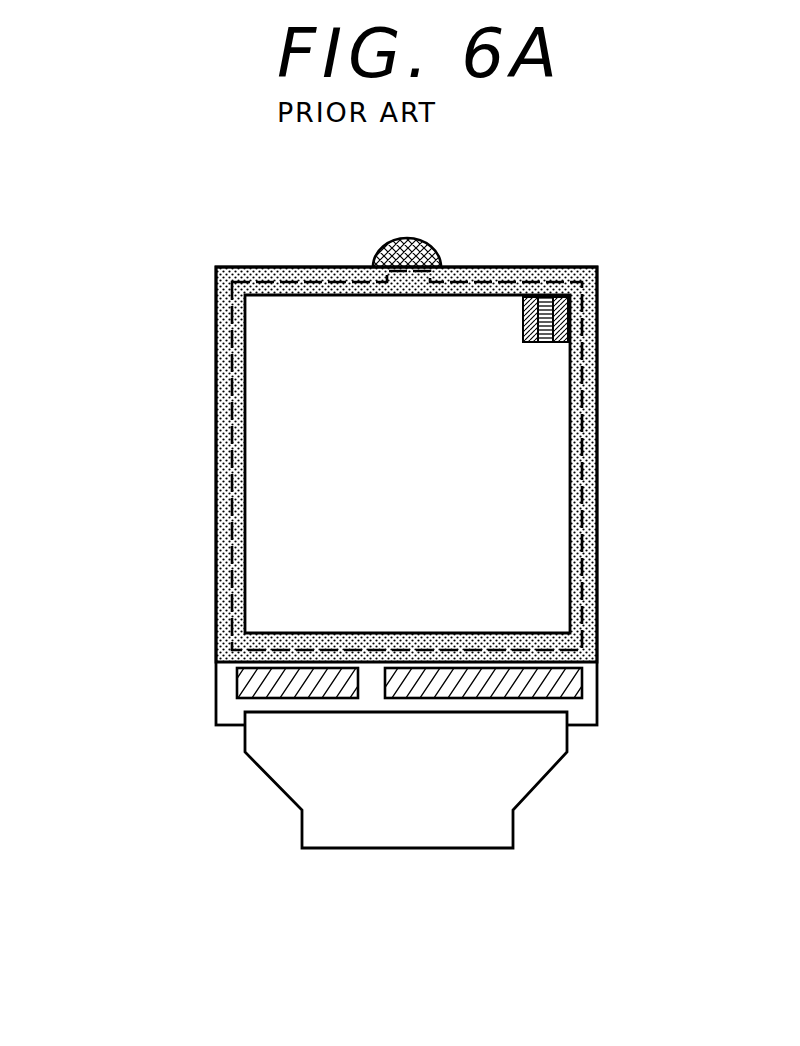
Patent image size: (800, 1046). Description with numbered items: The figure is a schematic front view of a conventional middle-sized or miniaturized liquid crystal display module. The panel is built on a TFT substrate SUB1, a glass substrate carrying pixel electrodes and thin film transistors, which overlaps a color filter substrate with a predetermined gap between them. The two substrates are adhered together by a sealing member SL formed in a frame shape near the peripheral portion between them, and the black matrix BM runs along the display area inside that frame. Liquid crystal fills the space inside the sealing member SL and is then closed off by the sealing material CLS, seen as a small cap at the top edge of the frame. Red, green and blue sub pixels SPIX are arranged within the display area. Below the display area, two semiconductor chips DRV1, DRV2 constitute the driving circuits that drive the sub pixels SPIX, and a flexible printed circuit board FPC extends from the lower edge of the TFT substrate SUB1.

The sealing material CLS is at (430, 250).
The sub pixels SPIX is at (570, 313).
The black matrix BM is at (582, 409).
The sealing member SL is at (590, 502).
The semiconductor chip DRV1 is at (565, 683).
The semiconductor chip DRV2 is at (243, 686).
The TFT substrate SUB1 is at (588, 710).
The flexible printed circuit board FPC is at (515, 778).